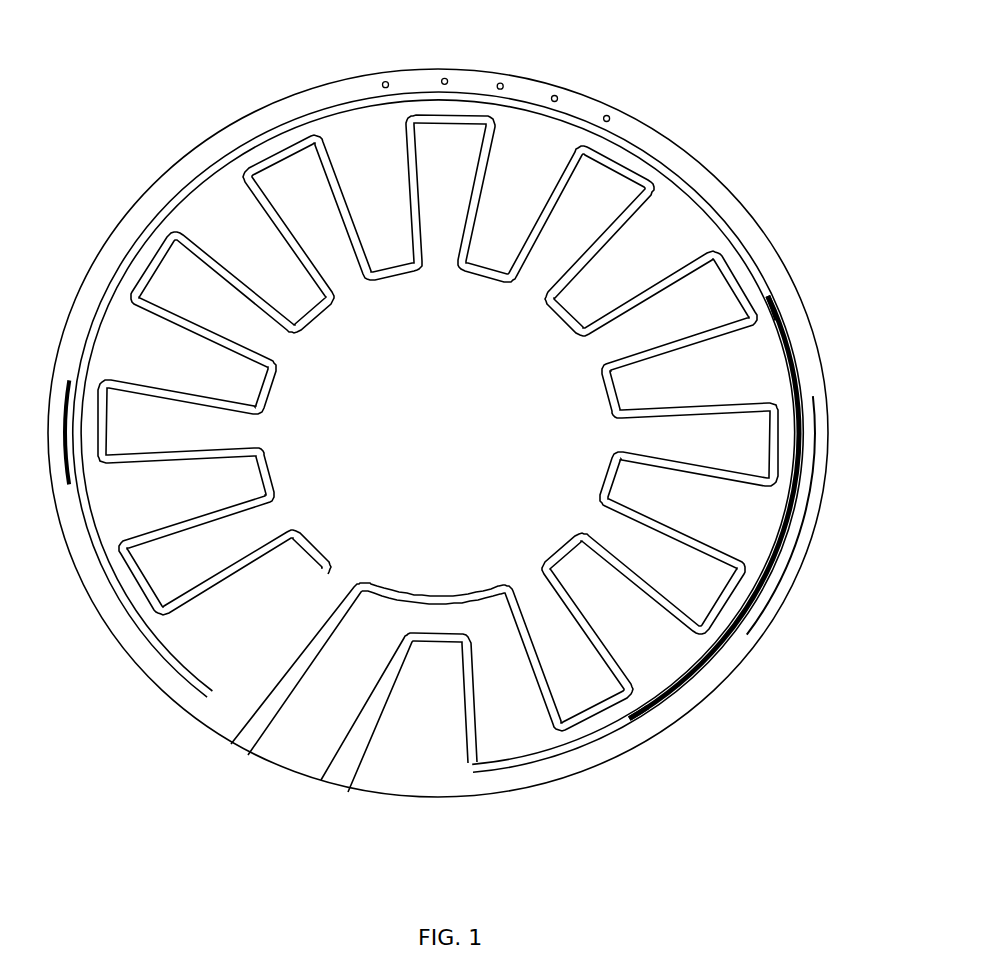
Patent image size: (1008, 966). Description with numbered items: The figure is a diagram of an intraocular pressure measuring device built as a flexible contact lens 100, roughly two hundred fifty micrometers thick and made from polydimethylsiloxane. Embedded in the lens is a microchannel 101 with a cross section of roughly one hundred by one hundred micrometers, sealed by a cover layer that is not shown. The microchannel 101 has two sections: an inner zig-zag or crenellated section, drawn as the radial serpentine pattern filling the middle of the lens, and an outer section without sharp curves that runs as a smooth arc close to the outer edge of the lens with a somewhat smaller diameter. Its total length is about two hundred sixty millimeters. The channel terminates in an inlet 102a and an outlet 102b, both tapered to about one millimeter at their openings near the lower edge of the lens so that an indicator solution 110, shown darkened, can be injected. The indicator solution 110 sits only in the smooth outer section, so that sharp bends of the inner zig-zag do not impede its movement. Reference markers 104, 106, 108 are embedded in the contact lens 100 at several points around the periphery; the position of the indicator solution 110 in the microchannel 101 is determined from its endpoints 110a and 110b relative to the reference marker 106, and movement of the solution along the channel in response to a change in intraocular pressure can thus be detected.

The flexible contact lens 100 is at (178, 163).
The microchannel 101 is at (285, 128).
The inlet 102a is at (240, 740).
The outlet 102b is at (353, 783).
The reference marker 104 is at (607, 114).
The reference marker 106 is at (818, 430).
The reference marker 108 is at (65, 380).
The indicator solution 110 is at (748, 610).
The endpoint of the indicator solution 110a is at (640, 728).
The endpoint of the indicator solution 110b is at (775, 296).